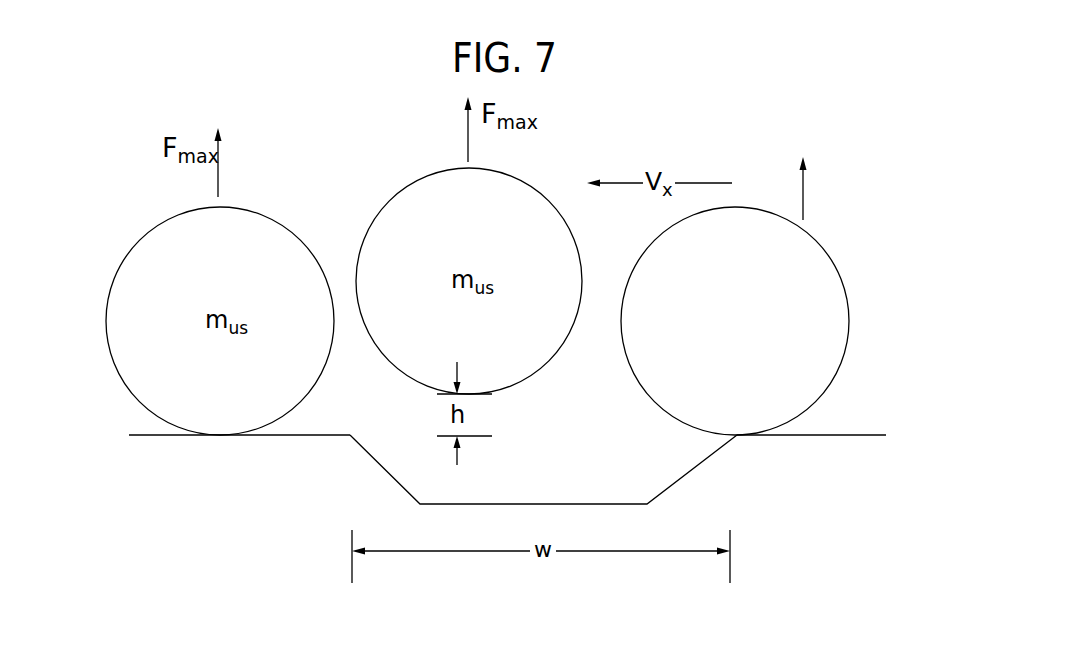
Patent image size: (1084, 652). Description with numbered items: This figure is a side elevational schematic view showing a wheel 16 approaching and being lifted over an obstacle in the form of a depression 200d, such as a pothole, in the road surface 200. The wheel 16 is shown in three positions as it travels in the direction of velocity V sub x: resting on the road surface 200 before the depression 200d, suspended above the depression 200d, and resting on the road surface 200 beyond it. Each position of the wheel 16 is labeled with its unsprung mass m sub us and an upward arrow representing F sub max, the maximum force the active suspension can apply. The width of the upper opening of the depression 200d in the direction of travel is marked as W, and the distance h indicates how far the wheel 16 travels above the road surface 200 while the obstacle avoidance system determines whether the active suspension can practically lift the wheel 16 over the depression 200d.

The wheel 16 is at (859, 269).
The road surface 200 is at (507, 469).
The depression 200d is at (690, 470).